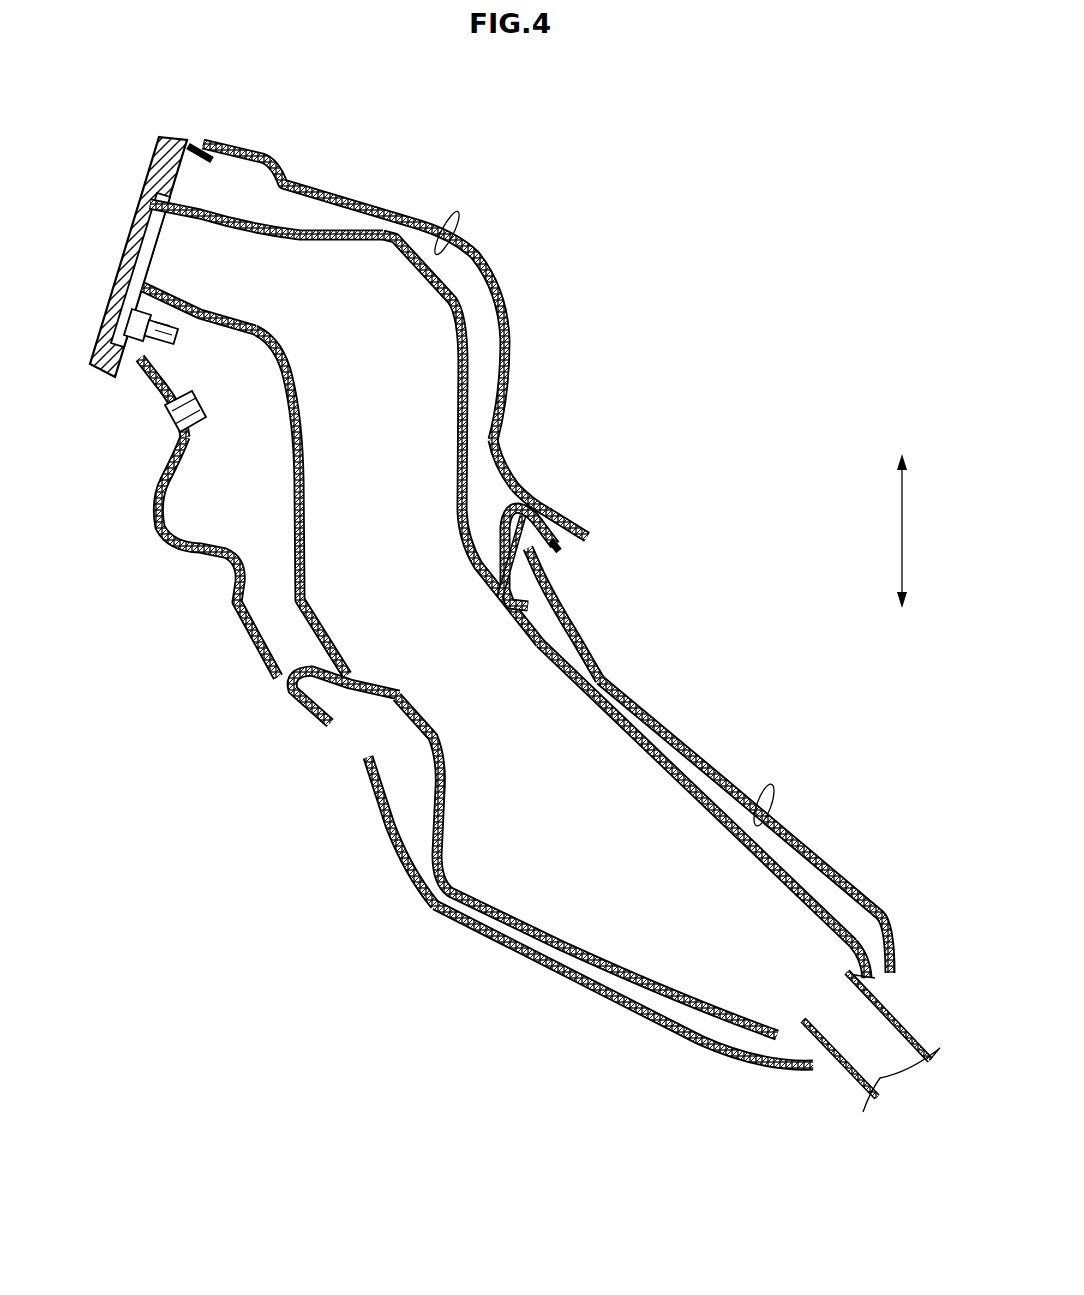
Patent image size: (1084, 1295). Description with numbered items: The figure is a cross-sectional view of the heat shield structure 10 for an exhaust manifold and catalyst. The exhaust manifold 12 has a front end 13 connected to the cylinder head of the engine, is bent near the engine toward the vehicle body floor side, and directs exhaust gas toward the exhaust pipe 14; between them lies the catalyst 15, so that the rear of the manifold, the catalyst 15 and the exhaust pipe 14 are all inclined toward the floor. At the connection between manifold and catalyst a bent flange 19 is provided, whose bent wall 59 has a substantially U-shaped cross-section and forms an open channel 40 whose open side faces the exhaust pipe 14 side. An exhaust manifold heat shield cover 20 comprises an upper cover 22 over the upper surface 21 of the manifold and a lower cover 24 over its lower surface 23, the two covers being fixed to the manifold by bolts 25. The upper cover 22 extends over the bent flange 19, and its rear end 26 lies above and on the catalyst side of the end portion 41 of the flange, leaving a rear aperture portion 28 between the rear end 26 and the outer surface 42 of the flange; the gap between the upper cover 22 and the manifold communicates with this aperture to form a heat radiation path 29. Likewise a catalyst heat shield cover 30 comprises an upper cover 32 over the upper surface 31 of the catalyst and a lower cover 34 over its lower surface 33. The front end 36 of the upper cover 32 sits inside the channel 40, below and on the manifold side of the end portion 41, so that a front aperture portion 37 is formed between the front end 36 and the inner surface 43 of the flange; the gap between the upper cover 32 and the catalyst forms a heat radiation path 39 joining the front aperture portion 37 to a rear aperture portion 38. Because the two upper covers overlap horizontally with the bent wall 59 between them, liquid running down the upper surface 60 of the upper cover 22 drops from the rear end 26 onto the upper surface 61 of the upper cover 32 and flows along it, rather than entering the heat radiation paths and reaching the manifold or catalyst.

The heat shield structure 10 is at (439, 160).
The exhaust manifold 12 is at (200, 262).
The front end 13 is at (180, 136).
The exhaust pipe 14 is at (875, 1075).
The catalyst 15 is at (606, 941).
The bent flange 19 is at (503, 560).
The exhaust manifold heat shield cover 20 is at (100, 492).
The upper surface 21 is at (456, 295).
The upper cover 22 is at (457, 212).
The lower surface 23 is at (290, 452).
The lower cover 24 is at (196, 560).
The bolts 25 is at (163, 421).
The rear end 26 is at (590, 538).
The rear aperture portion 28 is at (562, 537).
The heat radiation path 29 is at (481, 346).
The catalyst heat shield cover 30 is at (535, 1132).
The upper surface 31 is at (700, 776).
The upper cover 32 is at (765, 805).
The lower surface 33 is at (480, 937).
The lower cover 34 is at (590, 982).
The front end 36 is at (499, 596).
The front aperture portion 37 is at (548, 562).
The rear aperture portion 38 is at (873, 976).
The heat radiation path 39 is at (790, 856).
The channel 40 is at (518, 538).
The end portion 41 is at (550, 556).
The outer surface 42 is at (533, 516).
The inner surface 43 is at (520, 536).
The bent wall 59 is at (546, 522).
The upper surface 60 is at (510, 372).
The upper surface 61 is at (602, 682).